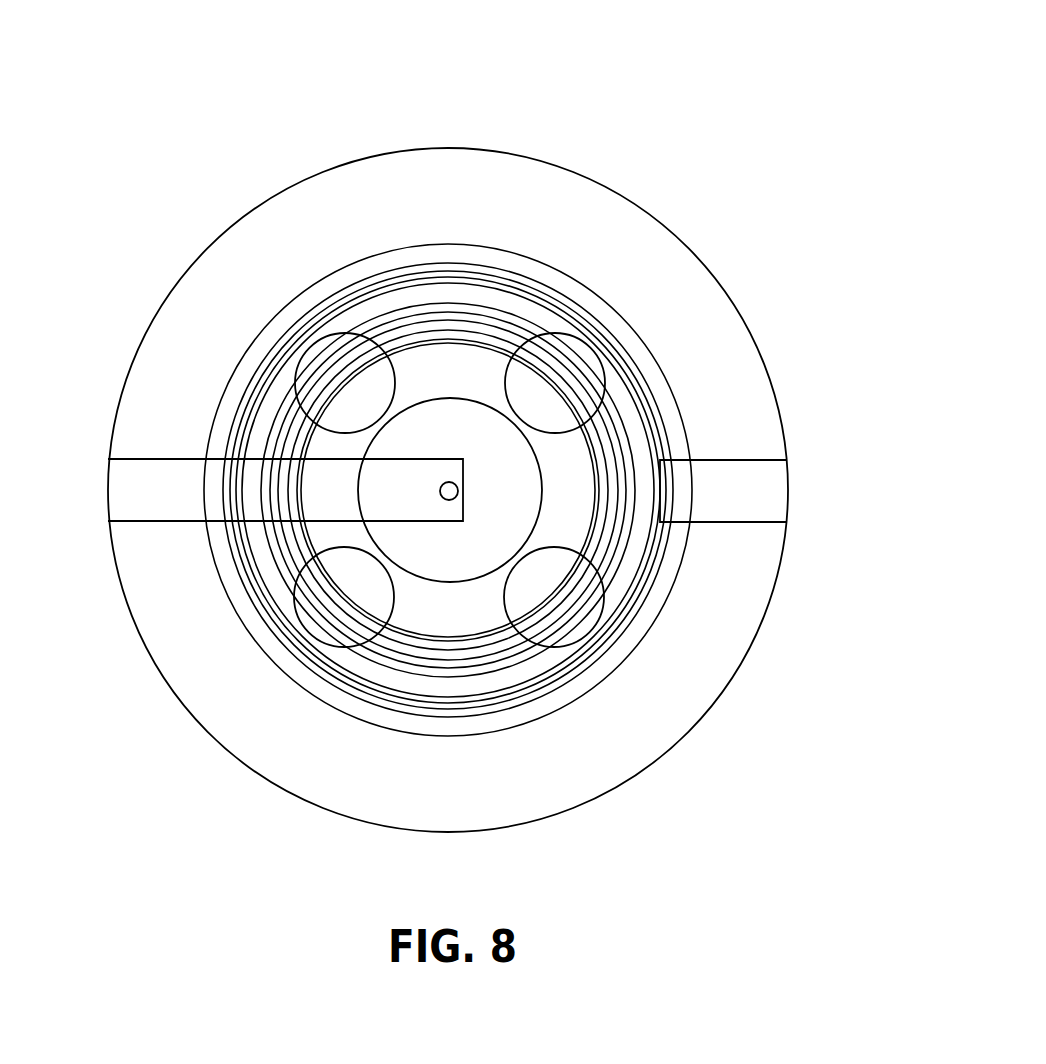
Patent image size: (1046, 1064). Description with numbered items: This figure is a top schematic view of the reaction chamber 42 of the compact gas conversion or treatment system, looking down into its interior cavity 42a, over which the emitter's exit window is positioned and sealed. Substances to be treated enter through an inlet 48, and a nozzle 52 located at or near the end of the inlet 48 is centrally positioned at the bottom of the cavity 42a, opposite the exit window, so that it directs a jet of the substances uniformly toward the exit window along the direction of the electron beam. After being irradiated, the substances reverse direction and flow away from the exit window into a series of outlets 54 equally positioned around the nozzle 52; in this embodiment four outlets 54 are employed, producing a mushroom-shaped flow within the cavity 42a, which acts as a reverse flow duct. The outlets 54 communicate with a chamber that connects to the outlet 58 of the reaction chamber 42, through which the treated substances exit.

The reaction chamber 42 is at (645, 133).
The interior cavity 42a is at (578, 518).
The inlet 48 is at (110, 475).
The nozzle 52 is at (449, 482).
The outlets 54 is at (502, 380).
The outlet 58 is at (788, 503).